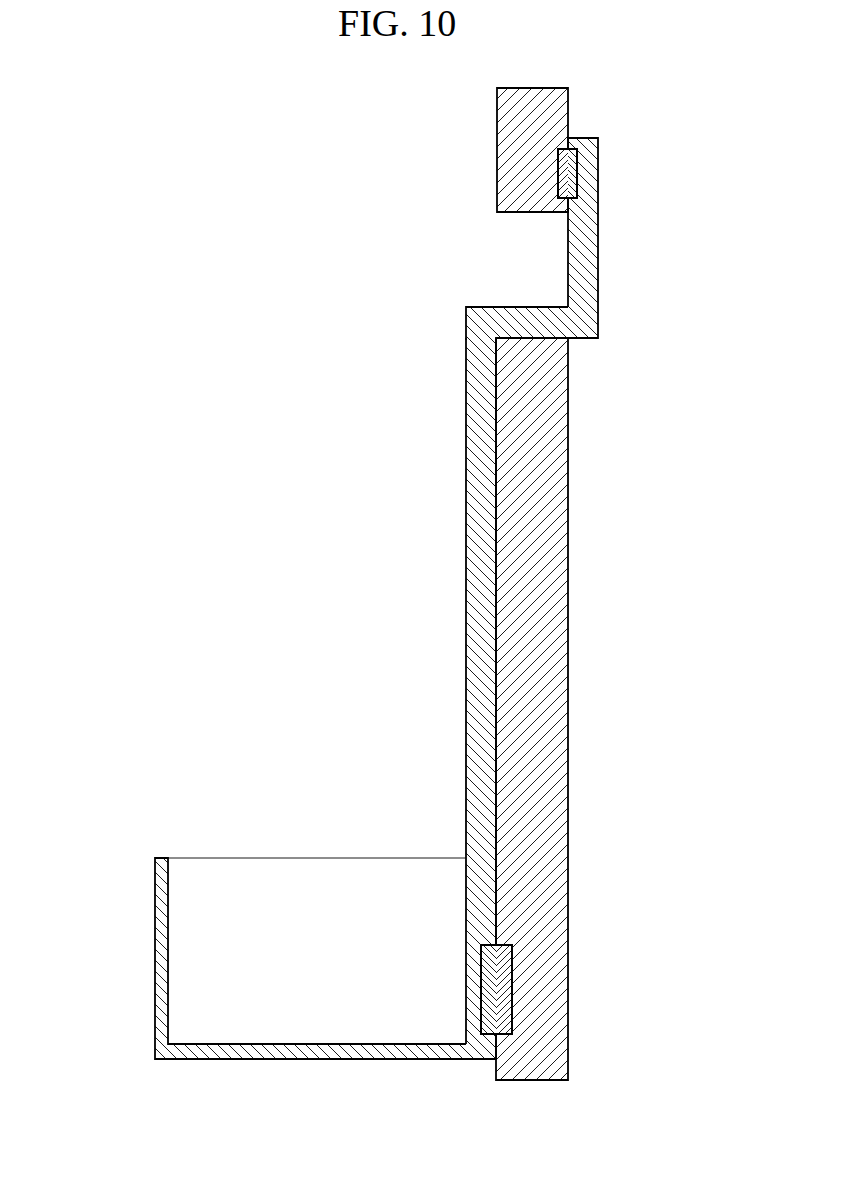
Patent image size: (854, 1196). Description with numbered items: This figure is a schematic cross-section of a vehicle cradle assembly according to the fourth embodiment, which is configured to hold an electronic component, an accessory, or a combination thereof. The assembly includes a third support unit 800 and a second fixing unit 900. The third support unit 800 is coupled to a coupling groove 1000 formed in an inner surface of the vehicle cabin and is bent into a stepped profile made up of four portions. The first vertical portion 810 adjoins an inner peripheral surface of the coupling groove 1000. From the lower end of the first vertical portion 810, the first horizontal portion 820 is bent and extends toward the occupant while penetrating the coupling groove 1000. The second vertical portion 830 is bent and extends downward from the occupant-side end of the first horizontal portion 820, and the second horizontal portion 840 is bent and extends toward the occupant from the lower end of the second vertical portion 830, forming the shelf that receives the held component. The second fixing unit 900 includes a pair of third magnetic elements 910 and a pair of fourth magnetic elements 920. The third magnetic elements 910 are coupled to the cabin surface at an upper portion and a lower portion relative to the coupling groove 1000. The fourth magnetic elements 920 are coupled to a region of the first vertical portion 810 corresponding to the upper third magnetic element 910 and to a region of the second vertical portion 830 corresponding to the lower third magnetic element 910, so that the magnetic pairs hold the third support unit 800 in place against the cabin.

The third support unit 800 is at (427, 598).
The first vertical portion 810 is at (568, 273).
The first horizontal portion 820 is at (518, 307).
The second vertical portion 830 is at (467, 620).
The second horizontal portion 840 is at (161, 857).
The second fixing unit 900 is at (378, 618).
The third magnetic element 910 is at (578, 170).
The fourth magnetic element 920 is at (558, 167).
The coupling groove 1000 is at (527, 243).